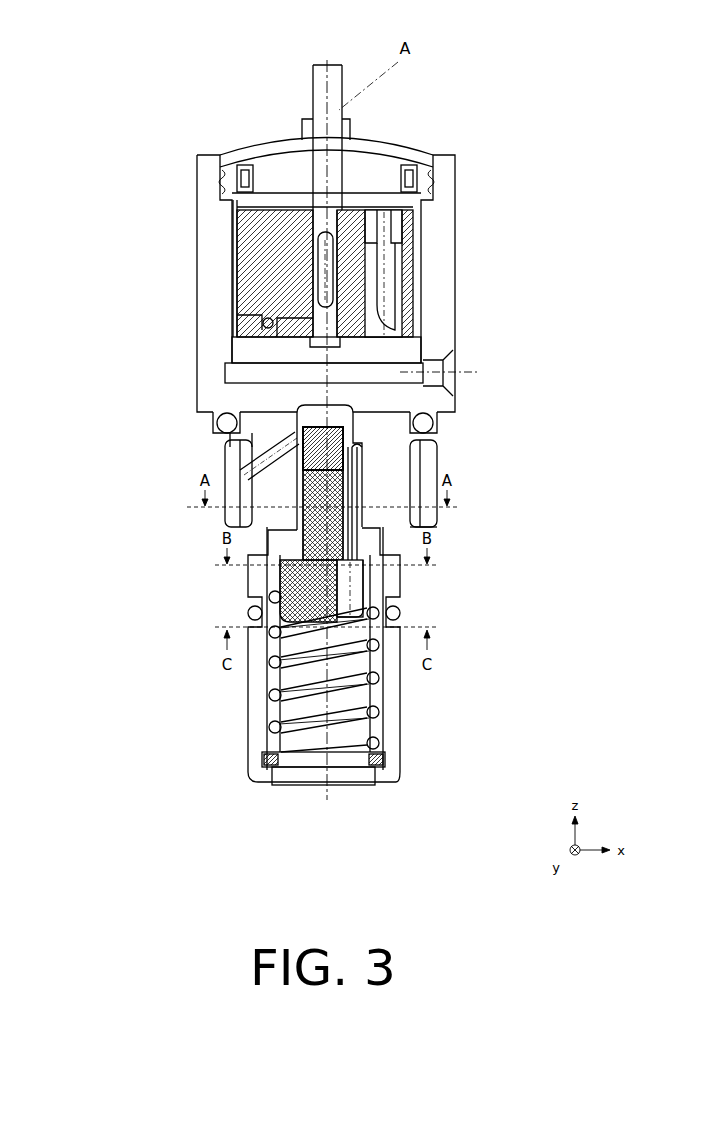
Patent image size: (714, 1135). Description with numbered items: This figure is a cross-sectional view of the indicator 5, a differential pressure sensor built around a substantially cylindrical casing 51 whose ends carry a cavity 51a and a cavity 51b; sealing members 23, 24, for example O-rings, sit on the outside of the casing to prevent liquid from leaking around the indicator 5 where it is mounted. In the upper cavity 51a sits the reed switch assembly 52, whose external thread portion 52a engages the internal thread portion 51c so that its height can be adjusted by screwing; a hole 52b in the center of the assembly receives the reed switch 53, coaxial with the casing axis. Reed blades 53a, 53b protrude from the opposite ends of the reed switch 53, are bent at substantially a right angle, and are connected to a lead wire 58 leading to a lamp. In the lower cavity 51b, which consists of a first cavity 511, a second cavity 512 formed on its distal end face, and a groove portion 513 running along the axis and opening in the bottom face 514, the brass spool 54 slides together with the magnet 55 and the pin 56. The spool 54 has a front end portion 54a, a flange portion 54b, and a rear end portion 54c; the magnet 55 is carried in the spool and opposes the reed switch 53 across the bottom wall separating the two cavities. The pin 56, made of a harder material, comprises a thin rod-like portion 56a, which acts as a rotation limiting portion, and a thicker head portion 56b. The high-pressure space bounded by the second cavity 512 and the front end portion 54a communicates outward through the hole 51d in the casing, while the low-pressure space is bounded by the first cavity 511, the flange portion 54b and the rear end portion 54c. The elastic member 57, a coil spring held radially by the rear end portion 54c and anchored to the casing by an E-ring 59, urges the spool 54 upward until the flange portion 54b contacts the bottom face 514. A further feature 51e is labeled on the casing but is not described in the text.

The indicator 5 is at (545, 75).
The sealing member 23 is at (425, 432).
The sealing member 24 is at (403, 617).
The casing 51 is at (447, 160).
The cavity 51a is at (230, 372).
The cavity 51b is at (70, 490).
The internal thread portion 51c is at (403, 347).
The hole 51d is at (222, 440).
The cylindrical portion 51e is at (412, 470).
The first cavity 511 is at (278, 682).
The second cavity 512 is at (215, 398).
The groove portion 513 is at (293, 452).
The bottom face 514 is at (417, 527).
The reed switch assembly 52 is at (410, 263).
The external thread portion 52a is at (393, 292).
The hole 52b is at (370, 212).
The reed switch 53 is at (323, 263).
The reed blade 53a is at (313, 310).
The reed blade 53b is at (320, 212).
The spool 54 is at (167, 540).
The front end portion 54a is at (296, 514).
The flange portion 54b is at (287, 574).
The rear end portion 54c is at (262, 605).
The magnet 55 is at (367, 458).
The pin 56 is at (545, 530).
The rod-like portion 56a is at (368, 522).
The head portion 56b is at (365, 573).
The elastic member 57 is at (297, 703).
The lead wire 58 is at (313, 102).
The E-ring 59 is at (267, 760).